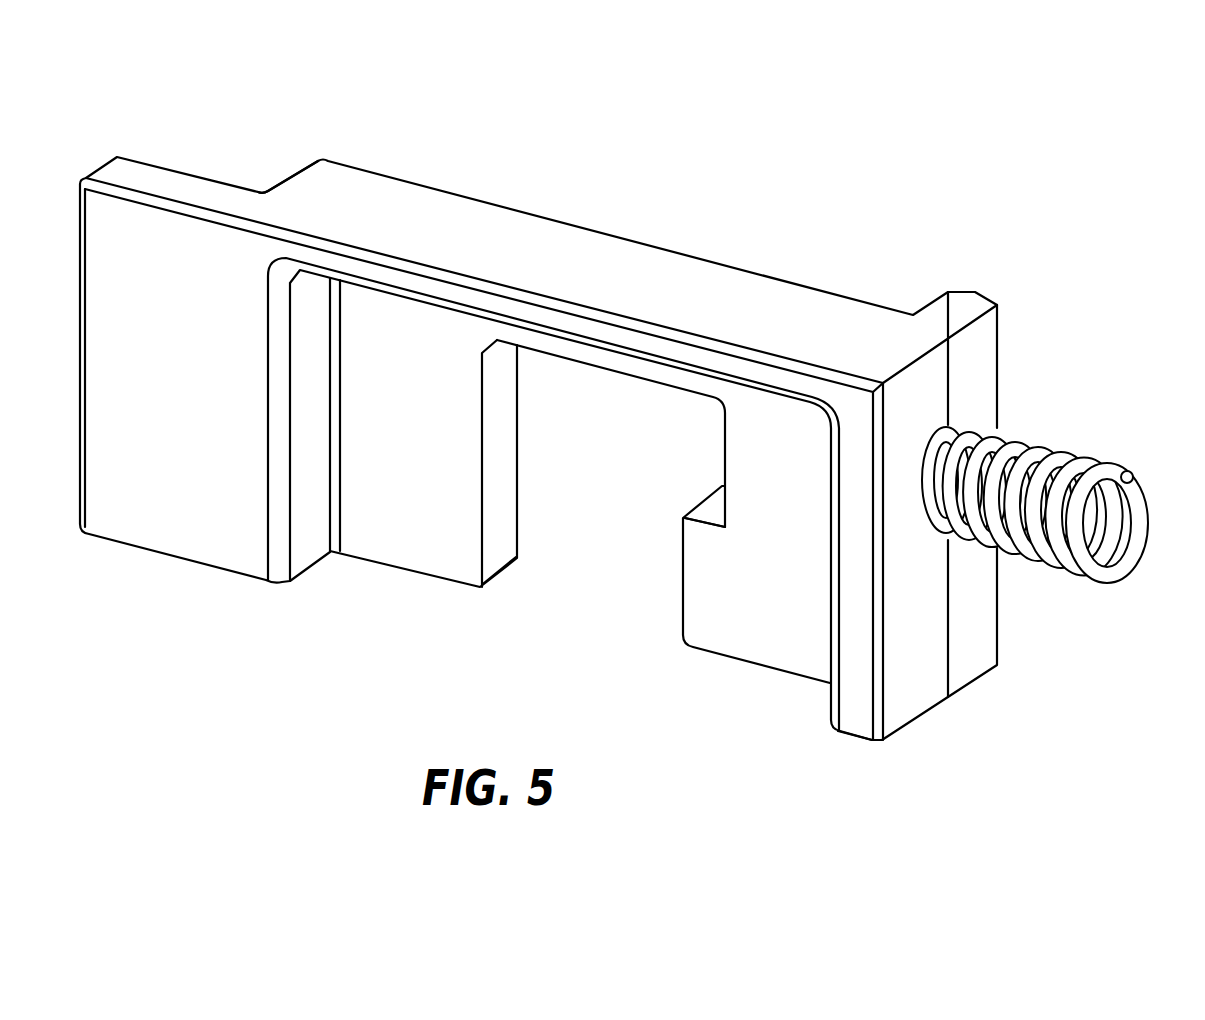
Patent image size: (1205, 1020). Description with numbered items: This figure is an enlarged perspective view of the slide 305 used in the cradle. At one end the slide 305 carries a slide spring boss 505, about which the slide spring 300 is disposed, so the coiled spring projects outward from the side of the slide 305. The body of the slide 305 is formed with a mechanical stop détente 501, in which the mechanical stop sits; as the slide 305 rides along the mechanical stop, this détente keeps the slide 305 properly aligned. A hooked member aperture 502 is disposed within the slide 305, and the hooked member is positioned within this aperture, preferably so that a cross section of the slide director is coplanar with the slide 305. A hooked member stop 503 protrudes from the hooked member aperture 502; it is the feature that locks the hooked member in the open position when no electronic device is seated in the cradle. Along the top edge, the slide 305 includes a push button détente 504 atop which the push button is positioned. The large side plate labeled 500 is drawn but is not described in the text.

The slide spring 300 is at (1048, 447).
The slide 305 is at (538, 396).
The side plate 500 is at (187, 365).
The mechanical stop détente 501 is at (757, 455).
The hooked member aperture 502 is at (619, 454).
The hooked member stop 503 is at (682, 562).
The push button détente 504 is at (255, 145).
The slide spring boss 505 is at (1112, 513).